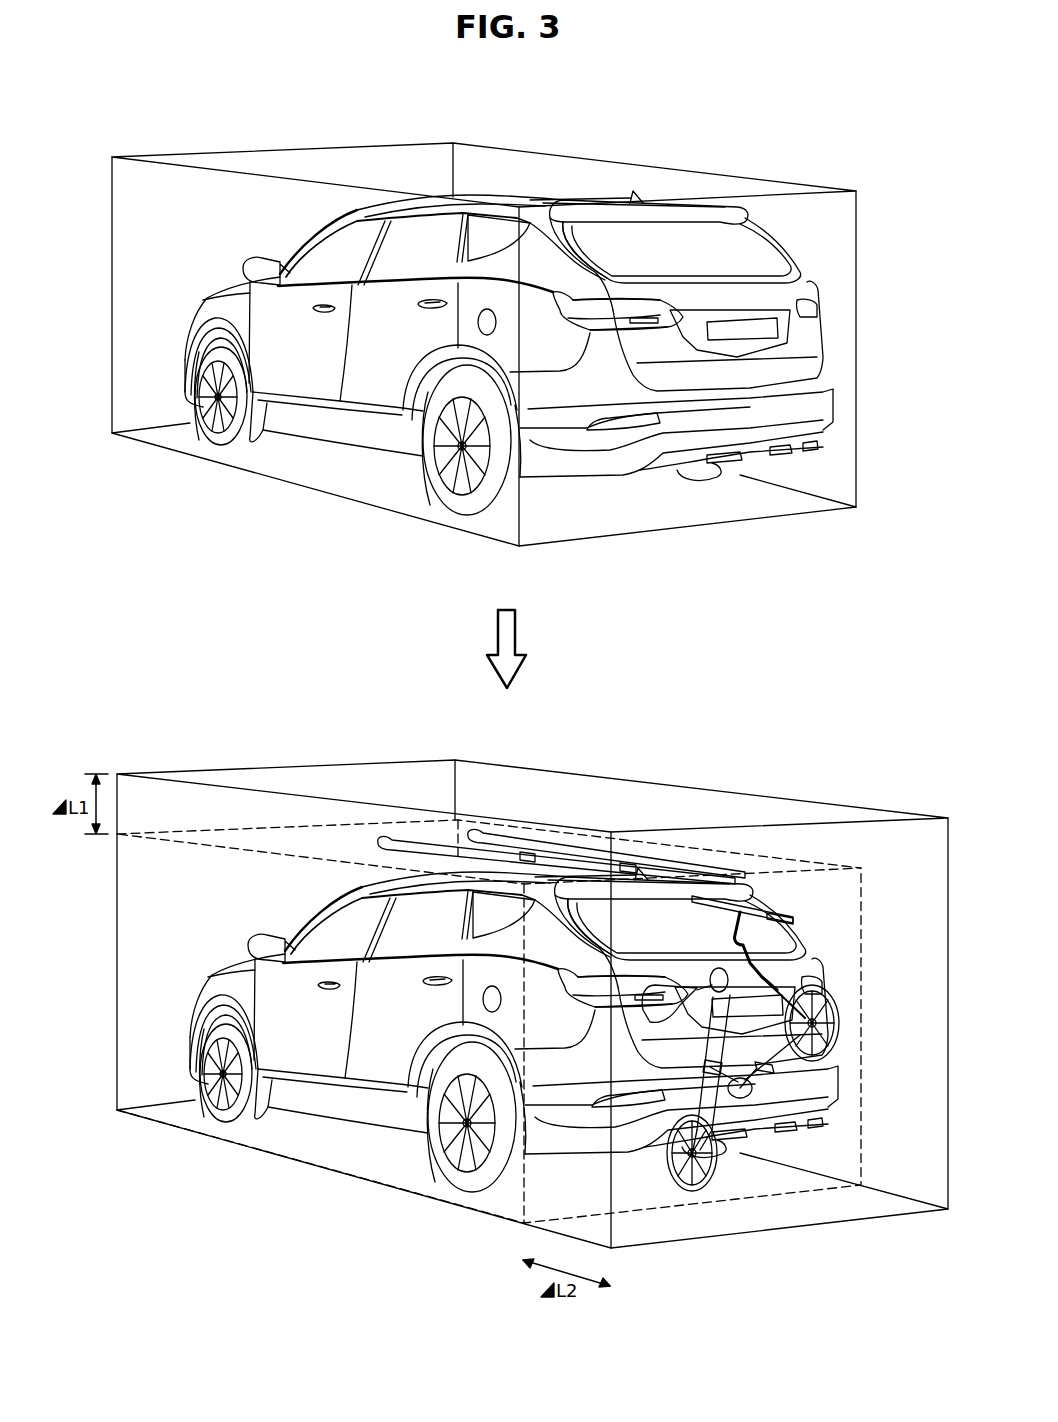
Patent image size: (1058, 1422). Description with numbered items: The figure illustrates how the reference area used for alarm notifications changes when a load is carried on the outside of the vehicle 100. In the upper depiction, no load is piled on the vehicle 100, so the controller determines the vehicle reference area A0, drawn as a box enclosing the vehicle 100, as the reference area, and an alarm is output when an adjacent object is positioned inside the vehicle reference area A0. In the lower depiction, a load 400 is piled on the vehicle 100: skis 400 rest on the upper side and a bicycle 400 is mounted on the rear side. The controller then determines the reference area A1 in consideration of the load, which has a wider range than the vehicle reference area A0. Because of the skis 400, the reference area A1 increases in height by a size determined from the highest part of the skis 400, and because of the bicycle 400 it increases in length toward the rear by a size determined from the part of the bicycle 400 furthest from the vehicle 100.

The vehicle 100 is at (287, 244).
The vehicle reference area A0 is at (705, 170).
The reference area in consideration of the load A1 is at (798, 800).
The load 400 is at (412, 849).